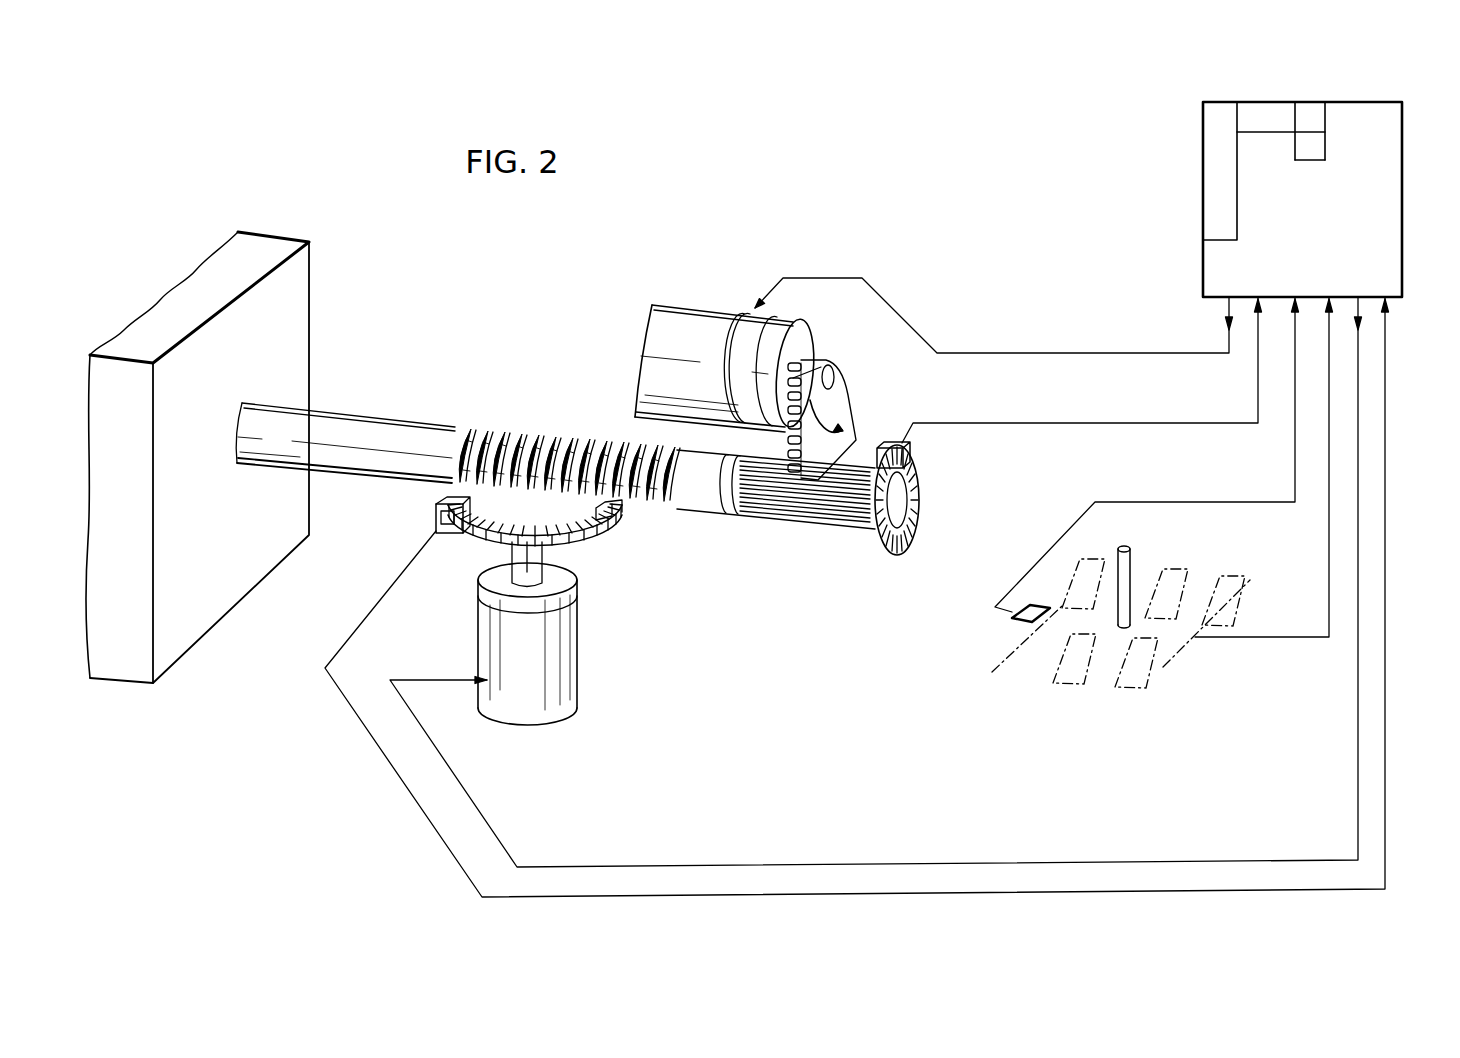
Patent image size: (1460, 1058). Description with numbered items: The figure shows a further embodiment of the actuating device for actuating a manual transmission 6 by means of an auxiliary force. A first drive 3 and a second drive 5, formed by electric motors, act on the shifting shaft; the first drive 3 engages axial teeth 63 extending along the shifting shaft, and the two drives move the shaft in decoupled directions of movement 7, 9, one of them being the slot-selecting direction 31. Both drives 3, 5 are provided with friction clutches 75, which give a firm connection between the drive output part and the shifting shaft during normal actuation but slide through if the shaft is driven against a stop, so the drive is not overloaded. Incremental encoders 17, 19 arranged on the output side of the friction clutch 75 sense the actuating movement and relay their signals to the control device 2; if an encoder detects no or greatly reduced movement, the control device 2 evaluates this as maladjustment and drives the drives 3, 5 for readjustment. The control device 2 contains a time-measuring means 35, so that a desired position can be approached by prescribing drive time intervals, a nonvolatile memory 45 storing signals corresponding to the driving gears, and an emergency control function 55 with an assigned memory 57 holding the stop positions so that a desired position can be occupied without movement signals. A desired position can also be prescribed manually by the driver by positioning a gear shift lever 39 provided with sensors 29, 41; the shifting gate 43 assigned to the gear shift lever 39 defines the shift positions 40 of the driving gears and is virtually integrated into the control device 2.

The control device 2 is at (1390, 192).
The first drive 3 is at (697, 306).
The second drive 5 is at (568, 690).
The manual transmission 6 is at (289, 281).
The direction of movement 7 is at (519, 421).
The direction of movement 9 is at (426, 494).
The incremental encoder 17 is at (925, 448).
The incremental encoder 19 is at (447, 555).
The sensor 29 is at (998, 623).
The slot-selecting direction 31 is at (930, 578).
The time-measuring means 35 is at (1273, 112).
The gear shift lever 39 is at (1113, 552).
The shift positions 40 is at (1005, 664).
The sensor 41 is at (1196, 648).
The shifting gate 43 is at (1040, 695).
The nonvolatile memory 45 is at (1212, 205).
The emergency control function 55 is at (1310, 112).
The memory 57 is at (1312, 150).
The axial teeth 63 is at (782, 515).
The friction clutch 75 is at (578, 597).